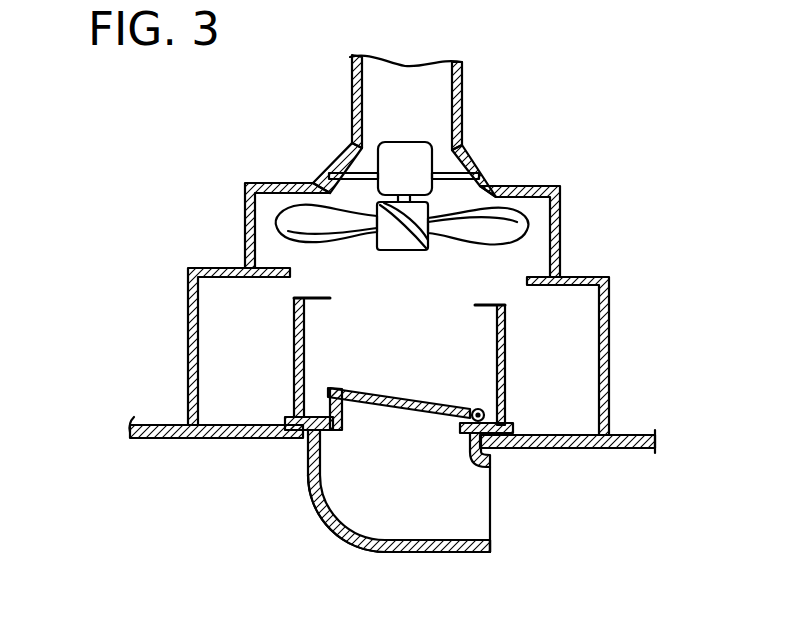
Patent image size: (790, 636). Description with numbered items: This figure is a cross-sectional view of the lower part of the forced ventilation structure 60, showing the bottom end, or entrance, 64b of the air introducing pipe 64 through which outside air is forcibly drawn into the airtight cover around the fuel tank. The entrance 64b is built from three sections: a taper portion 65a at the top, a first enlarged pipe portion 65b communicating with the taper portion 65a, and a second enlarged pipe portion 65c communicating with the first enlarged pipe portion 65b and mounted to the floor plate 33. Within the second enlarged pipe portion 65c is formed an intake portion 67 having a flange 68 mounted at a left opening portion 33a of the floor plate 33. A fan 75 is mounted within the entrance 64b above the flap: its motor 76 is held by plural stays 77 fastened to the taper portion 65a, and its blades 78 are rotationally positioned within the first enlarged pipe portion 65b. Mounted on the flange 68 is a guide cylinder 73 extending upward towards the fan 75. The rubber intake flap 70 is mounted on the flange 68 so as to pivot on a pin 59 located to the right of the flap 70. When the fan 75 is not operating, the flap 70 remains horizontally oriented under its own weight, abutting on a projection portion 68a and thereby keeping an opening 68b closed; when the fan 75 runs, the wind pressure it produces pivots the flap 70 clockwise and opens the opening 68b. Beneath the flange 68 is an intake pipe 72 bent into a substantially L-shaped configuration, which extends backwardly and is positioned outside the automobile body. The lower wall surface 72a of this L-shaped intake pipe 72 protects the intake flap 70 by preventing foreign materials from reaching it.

The forced ventilation structure 60 is at (477, 67).
The air introducing pipe 64 is at (352, 84).
The bottom end (entrance) 64b is at (112, 160).
The taper portion 65a is at (333, 162).
The first enlarged pipe portion 65b is at (243, 237).
The second enlarged pipe portion 65c is at (188, 350).
The intake portion 67 is at (548, 348).
The fan 75 is at (413, 130).
The motor 76 is at (423, 145).
The stays 77 is at (460, 173).
The blades 78 is at (517, 223).
The guide cylinder 73 is at (505, 333).
The flange 68 is at (318, 421).
The projection portion 68a is at (357, 388).
The opening 68b is at (378, 418).
The pin 59 is at (497, 393).
The intake flap 70 is at (422, 400).
The floor plate 33 is at (645, 437).
The left opening portion 33a is at (312, 478).
The intake pipe 72 is at (453, 552).
The lower wall surface 72a is at (402, 552).